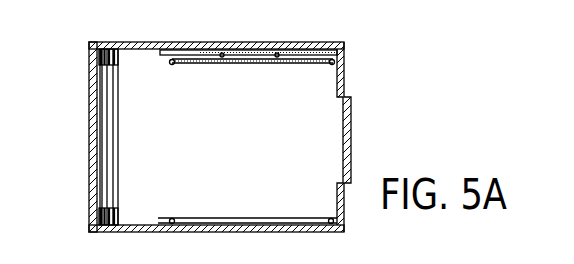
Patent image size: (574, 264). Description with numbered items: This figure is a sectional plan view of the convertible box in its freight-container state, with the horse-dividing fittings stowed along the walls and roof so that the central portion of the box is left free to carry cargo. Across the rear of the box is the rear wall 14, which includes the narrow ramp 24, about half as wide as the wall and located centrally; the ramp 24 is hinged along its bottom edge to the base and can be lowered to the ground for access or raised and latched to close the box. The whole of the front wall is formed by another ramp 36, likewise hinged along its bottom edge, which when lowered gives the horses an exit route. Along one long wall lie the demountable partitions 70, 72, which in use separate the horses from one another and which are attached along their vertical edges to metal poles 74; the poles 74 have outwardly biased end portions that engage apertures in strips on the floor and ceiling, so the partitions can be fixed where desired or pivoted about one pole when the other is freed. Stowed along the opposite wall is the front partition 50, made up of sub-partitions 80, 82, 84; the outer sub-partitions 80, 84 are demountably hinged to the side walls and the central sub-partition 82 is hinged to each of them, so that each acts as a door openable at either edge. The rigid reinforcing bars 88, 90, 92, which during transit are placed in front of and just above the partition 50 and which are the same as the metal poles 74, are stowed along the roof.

The rear wall 14 is at (344, 70).
The ramp 24 is at (352, 134).
The ramp 36 is at (90, 125).
The partition 50 is at (195, 64).
The partition 70 is at (295, 219).
The partition 72 is at (290, 64).
The metal poles 74 is at (172, 65).
The sub-partition 80 is at (308, 50).
The sub-partition 82 is at (249, 50).
The sub-partition 84 is at (186, 50).
The reinforcing bar 88 is at (118, 92).
The reinforcing bar 90 is at (115, 130).
The reinforcing bar 92 is at (103, 175).